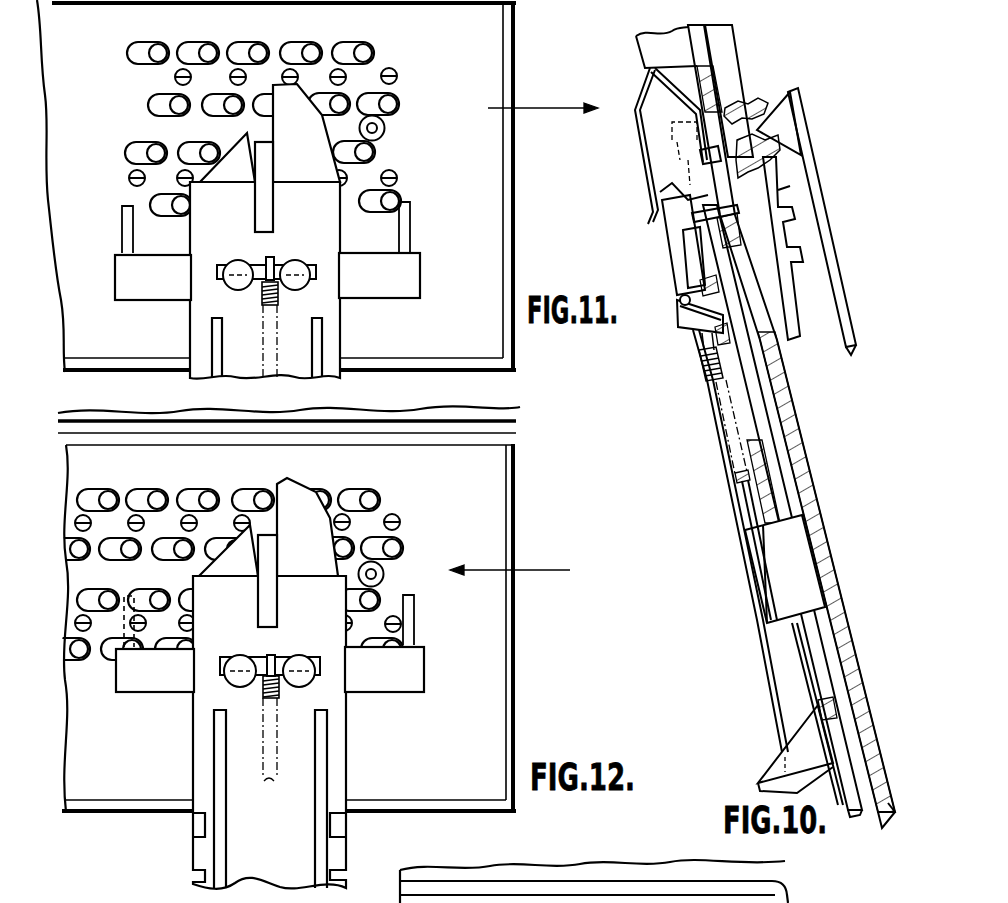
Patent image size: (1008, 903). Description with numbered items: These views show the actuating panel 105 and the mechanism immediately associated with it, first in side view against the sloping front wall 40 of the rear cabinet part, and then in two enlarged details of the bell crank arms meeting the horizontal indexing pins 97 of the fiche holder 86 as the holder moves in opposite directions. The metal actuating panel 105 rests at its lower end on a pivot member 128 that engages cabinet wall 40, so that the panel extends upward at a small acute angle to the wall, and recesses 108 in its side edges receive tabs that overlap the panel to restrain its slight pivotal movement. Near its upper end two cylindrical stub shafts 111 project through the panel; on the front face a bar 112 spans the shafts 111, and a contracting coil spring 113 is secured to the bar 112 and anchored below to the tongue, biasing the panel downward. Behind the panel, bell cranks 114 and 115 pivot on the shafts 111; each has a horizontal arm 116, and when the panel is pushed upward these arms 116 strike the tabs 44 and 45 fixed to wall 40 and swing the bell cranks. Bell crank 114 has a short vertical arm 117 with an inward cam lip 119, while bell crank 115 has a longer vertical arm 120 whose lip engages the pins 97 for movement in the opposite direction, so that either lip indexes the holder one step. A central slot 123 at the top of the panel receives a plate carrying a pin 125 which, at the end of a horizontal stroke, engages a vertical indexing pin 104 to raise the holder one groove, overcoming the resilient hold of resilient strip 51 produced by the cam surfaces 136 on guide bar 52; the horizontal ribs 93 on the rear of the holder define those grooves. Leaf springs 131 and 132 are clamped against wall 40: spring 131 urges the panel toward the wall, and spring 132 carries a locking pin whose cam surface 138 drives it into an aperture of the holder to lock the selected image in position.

In FIG. 10, the front wall of rear cabinet part 40 is at (827, 570).
In FIG. 11, the tab 44 is at (122, 252).
In FIG. 12, the tab 44 is at (122, 631).
In FIG. 11, the tab 45 is at (411, 247).
In FIG. 12, the tab 45 is at (416, 628).
In FIG. 10, the resilient strip 51 is at (822, 203).
In FIG. 10, the guide bar 52 is at (780, 130).
In FIG. 10, the fiche holder 86 is at (740, 67).
In FIG. 10, the horizontal rib 93 is at (796, 250).
In FIG. 11, the horizontal indexing pin 97 is at (396, 79).
In FIG. 12, the horizontal indexing pin 97 is at (400, 520).
In FIG. 11, the vertical indexing pin 104 is at (385, 131).
In FIG. 10, the actuating panel 105 is at (847, 810).
In FIG. 12, the recess 108 is at (332, 852).
In FIG. 11, the stub shaft 111 is at (245, 286).
In FIG. 12, the stub shaft 111 is at (246, 684).
In FIG. 10, the stub shaft 111 is at (680, 320).
In FIG. 11, the bar 112 is at (275, 263).
In FIG. 12, the bar 112 is at (275, 660).
In FIG. 10, the bar 112 is at (680, 301).
In FIG. 11, the contracting coil spring 113 is at (262, 306).
In FIG. 12, the contracting coil spring 113 is at (258, 699).
In FIG. 10, the contracting coil spring 113 is at (700, 365).
In FIG. 11, the bell crank 114 is at (237, 170).
In FIG. 11, the bell crank 115 is at (407, 272).
In FIG. 12, the bell crank 115 is at (395, 686).
In FIG. 11, the horizontal arm 116 is at (162, 290).
In FIG. 12, the horizontal arm 116 is at (167, 684).
In FIG. 11, the short vertical arm 117 is at (238, 152).
In FIG. 12, the short vertical arm 117 is at (236, 565).
In FIG. 10, the cam lip 119 is at (661, 191).
In FIG. 11, the vertical arm 120 is at (317, 144).
In FIG. 12, the vertical arm 120 is at (297, 561).
In FIG. 11, the slot 123 is at (272, 214).
In FIG. 10, the slot 123 is at (677, 230).
In FIG. 10, the pin 125 is at (765, 196).
In FIG. 10, the pivot member 128 is at (867, 793).
In FIG. 10, the leaf spring 131 is at (635, 107).
In FIG. 10, the leaf spring 132 is at (678, 100).
In FIG. 10, the cam surface 136 is at (777, 100).
In FIG. 10, the cam surface 138 is at (692, 153).